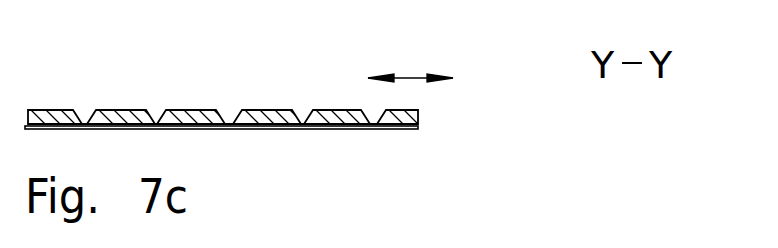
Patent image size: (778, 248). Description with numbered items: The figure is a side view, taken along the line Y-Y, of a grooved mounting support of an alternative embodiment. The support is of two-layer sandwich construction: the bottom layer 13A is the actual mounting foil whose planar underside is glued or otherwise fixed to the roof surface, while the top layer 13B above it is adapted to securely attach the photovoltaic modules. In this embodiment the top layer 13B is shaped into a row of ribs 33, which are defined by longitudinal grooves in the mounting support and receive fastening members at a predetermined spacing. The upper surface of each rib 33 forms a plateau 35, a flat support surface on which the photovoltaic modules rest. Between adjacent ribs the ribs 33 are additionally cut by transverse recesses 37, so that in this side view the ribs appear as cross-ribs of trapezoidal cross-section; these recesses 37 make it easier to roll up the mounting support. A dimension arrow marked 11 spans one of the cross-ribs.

The pitch of structure 11 is at (408, 78).
The bottom layer 13A is at (418, 128).
The top layer 13B is at (267, 75).
The rib 33 is at (265, 112).
The plateau 35 is at (122, 108).
The transverse recess 37 is at (304, 112).